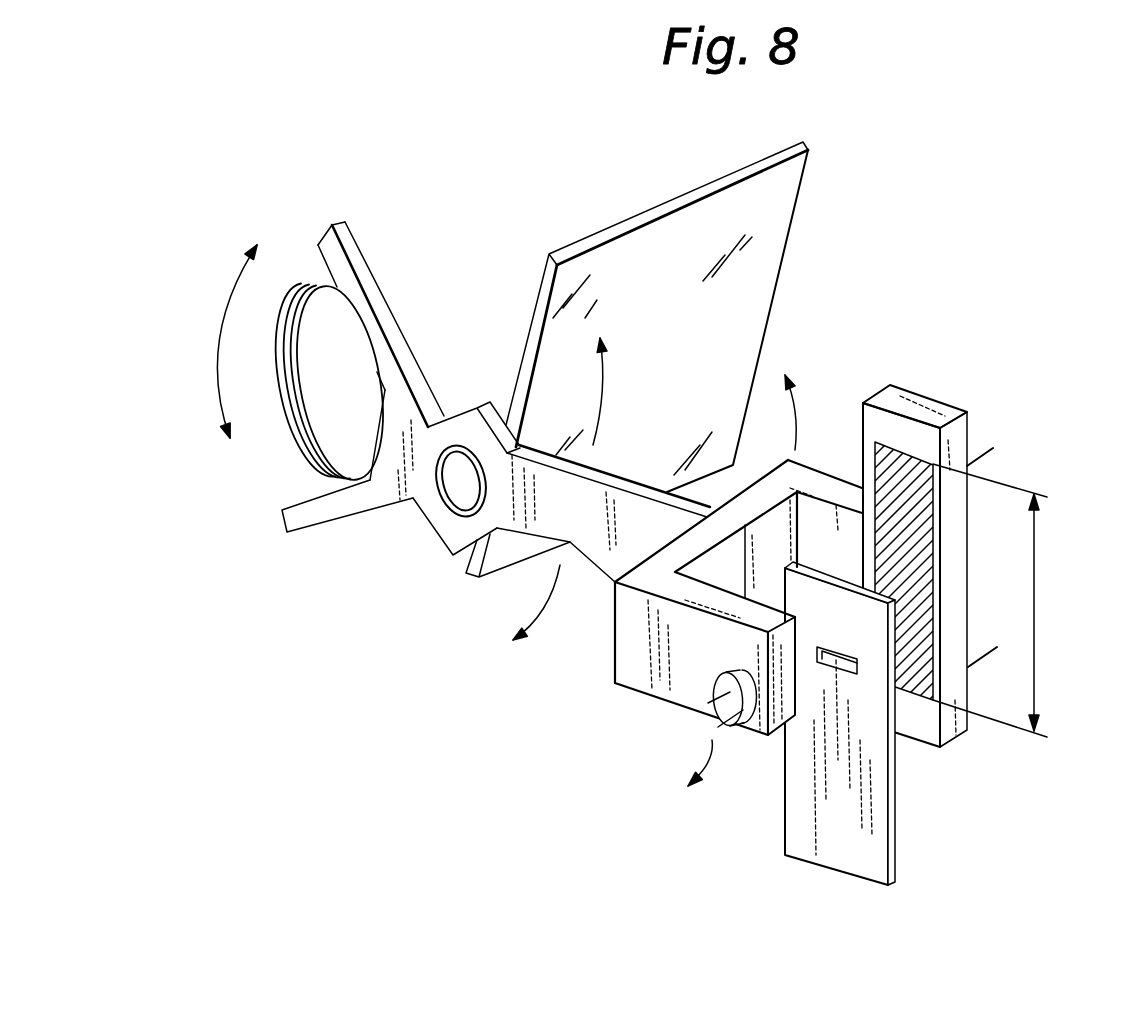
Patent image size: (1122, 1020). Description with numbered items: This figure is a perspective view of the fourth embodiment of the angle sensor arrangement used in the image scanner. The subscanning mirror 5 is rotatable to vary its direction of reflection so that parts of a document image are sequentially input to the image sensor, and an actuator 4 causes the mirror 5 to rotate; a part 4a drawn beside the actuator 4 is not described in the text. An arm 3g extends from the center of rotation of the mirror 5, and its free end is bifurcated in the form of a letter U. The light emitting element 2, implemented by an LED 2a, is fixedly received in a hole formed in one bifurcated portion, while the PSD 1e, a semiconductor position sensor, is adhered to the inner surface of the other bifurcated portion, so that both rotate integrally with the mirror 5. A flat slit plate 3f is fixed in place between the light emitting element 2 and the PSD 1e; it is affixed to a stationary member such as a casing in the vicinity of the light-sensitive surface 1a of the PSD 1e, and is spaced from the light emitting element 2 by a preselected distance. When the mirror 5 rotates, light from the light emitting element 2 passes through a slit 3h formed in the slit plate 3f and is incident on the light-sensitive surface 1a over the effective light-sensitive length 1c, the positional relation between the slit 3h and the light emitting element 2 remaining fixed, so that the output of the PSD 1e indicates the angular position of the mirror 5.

The light-sensitive surface 1a is at (890, 455).
The effective light-sensitive length 1c is at (1034, 614).
The PSD 1e is at (968, 413).
The light emitting element 2 is at (710, 726).
The LED 2a is at (723, 683).
The flat slit plate 3f is at (895, 862).
The arm 3g is at (641, 500).
The slit 3h is at (841, 660).
The actuator 4 is at (268, 443).
The lever 4a is at (303, 450).
The subscanning mirror 5 is at (725, 205).